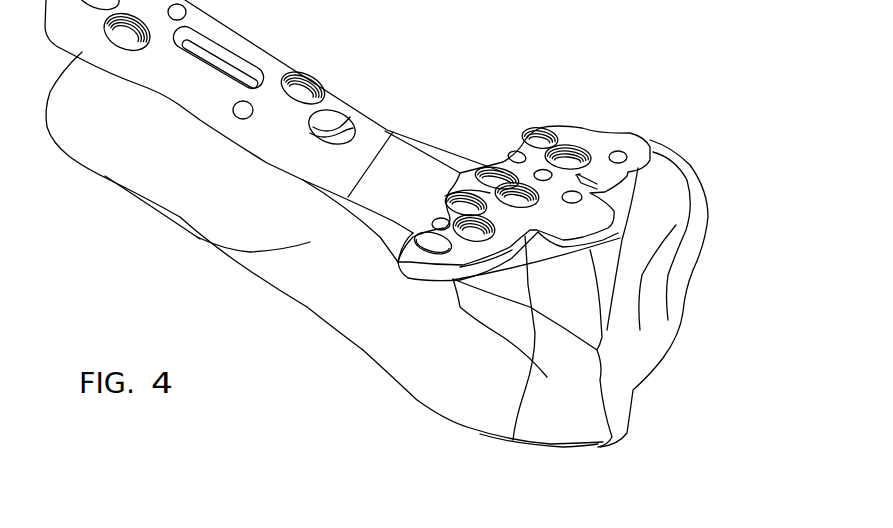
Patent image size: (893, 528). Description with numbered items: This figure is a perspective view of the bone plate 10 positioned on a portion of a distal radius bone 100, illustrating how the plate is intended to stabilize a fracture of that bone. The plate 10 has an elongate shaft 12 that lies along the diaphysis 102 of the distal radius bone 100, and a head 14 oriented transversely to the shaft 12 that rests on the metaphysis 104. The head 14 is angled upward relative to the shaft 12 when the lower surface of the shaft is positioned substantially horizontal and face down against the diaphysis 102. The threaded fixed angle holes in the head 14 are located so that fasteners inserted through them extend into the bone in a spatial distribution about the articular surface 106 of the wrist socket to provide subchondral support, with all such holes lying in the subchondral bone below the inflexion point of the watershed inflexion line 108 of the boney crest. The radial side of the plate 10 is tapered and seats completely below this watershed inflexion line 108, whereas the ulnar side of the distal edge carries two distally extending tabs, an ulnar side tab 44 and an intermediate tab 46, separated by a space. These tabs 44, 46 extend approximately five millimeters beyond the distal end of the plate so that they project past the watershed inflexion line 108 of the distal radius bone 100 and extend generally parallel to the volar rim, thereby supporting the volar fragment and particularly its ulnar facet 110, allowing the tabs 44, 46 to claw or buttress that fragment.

The bone plate 10 is at (412, 158).
The shaft 12 is at (278, 68).
The head 14 is at (577, 133).
The ulnar side tab 44 is at (657, 170).
The intermediate tab 46 is at (577, 226).
The distal radius bone 100 is at (317, 303).
The diaphysis 102 is at (153, 187).
The metaphysis 104 is at (437, 327).
The articular surface 106 is at (660, 282).
The watershed inflexion line 108 is at (513, 440).
The ulnar facet 110 is at (620, 205).